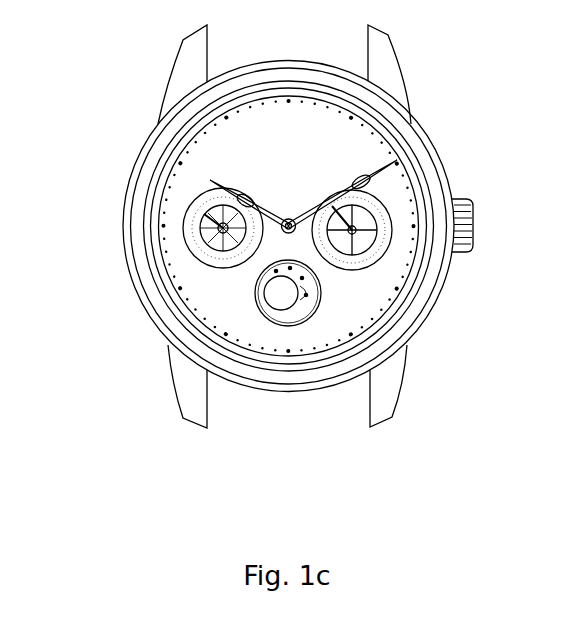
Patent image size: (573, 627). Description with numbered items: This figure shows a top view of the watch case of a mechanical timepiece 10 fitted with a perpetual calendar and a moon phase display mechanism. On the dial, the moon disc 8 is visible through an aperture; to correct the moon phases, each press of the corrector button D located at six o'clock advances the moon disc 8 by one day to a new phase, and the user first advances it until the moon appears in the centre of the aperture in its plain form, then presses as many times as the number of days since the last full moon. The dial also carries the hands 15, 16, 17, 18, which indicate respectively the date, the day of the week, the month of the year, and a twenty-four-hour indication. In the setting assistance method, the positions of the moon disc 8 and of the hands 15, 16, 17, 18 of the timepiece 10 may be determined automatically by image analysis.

The mechanical timepiece 10 is at (467, 88).
The moon disc 8 is at (307, 275).
The date hand 15 is at (275, 298).
The day of the week hand 16 is at (146, 251).
The month hand 17 is at (355, 250).
The 24-hour indicator hand 18 is at (237, 209).
The corrector button D is at (288, 396).